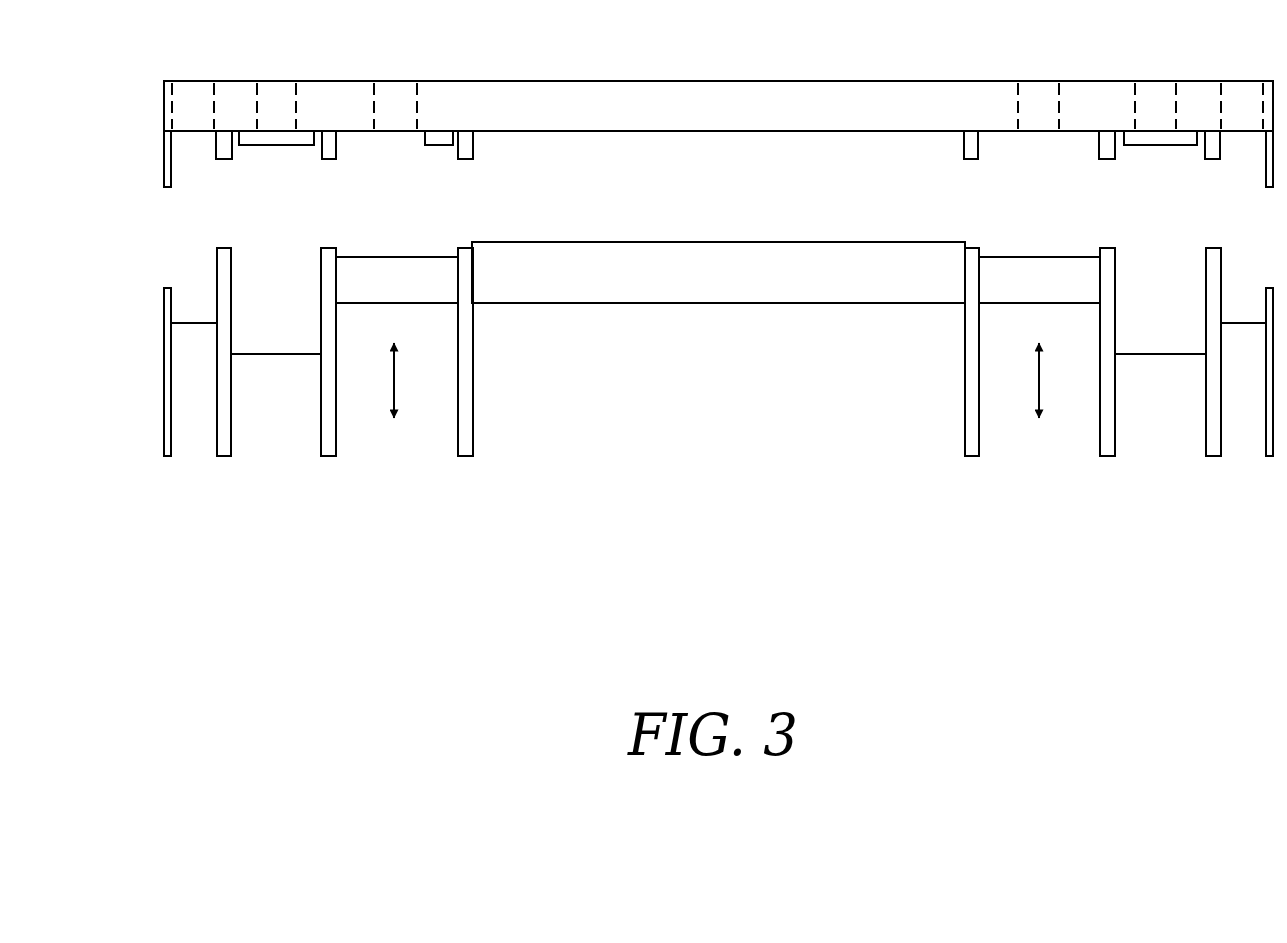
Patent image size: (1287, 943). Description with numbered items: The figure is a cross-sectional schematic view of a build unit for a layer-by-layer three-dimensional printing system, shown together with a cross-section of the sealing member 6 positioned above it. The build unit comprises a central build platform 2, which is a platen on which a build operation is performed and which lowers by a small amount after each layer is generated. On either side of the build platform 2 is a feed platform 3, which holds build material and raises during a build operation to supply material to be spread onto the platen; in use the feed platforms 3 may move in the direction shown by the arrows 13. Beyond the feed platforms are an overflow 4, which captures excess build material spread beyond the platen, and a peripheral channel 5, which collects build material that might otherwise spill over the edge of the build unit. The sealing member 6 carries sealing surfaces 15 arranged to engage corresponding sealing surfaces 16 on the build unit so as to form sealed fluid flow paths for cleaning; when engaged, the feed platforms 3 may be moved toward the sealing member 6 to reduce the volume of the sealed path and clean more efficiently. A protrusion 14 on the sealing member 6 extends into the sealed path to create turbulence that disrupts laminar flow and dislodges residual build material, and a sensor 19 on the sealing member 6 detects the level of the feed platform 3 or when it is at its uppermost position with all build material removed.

The build platform 2 is at (752, 294).
The feed platform 3 is at (1007, 270).
The overflow 4 is at (1133, 281).
The peripheral channel 5 is at (193, 293).
The sealing member 6 is at (722, 80).
The arrows 13 is at (407, 378).
The protrusion 14 is at (279, 148).
The sealing surfaces 15 is at (476, 143).
The sealing surfaces 16 is at (462, 244).
The sensor 19 is at (437, 145).